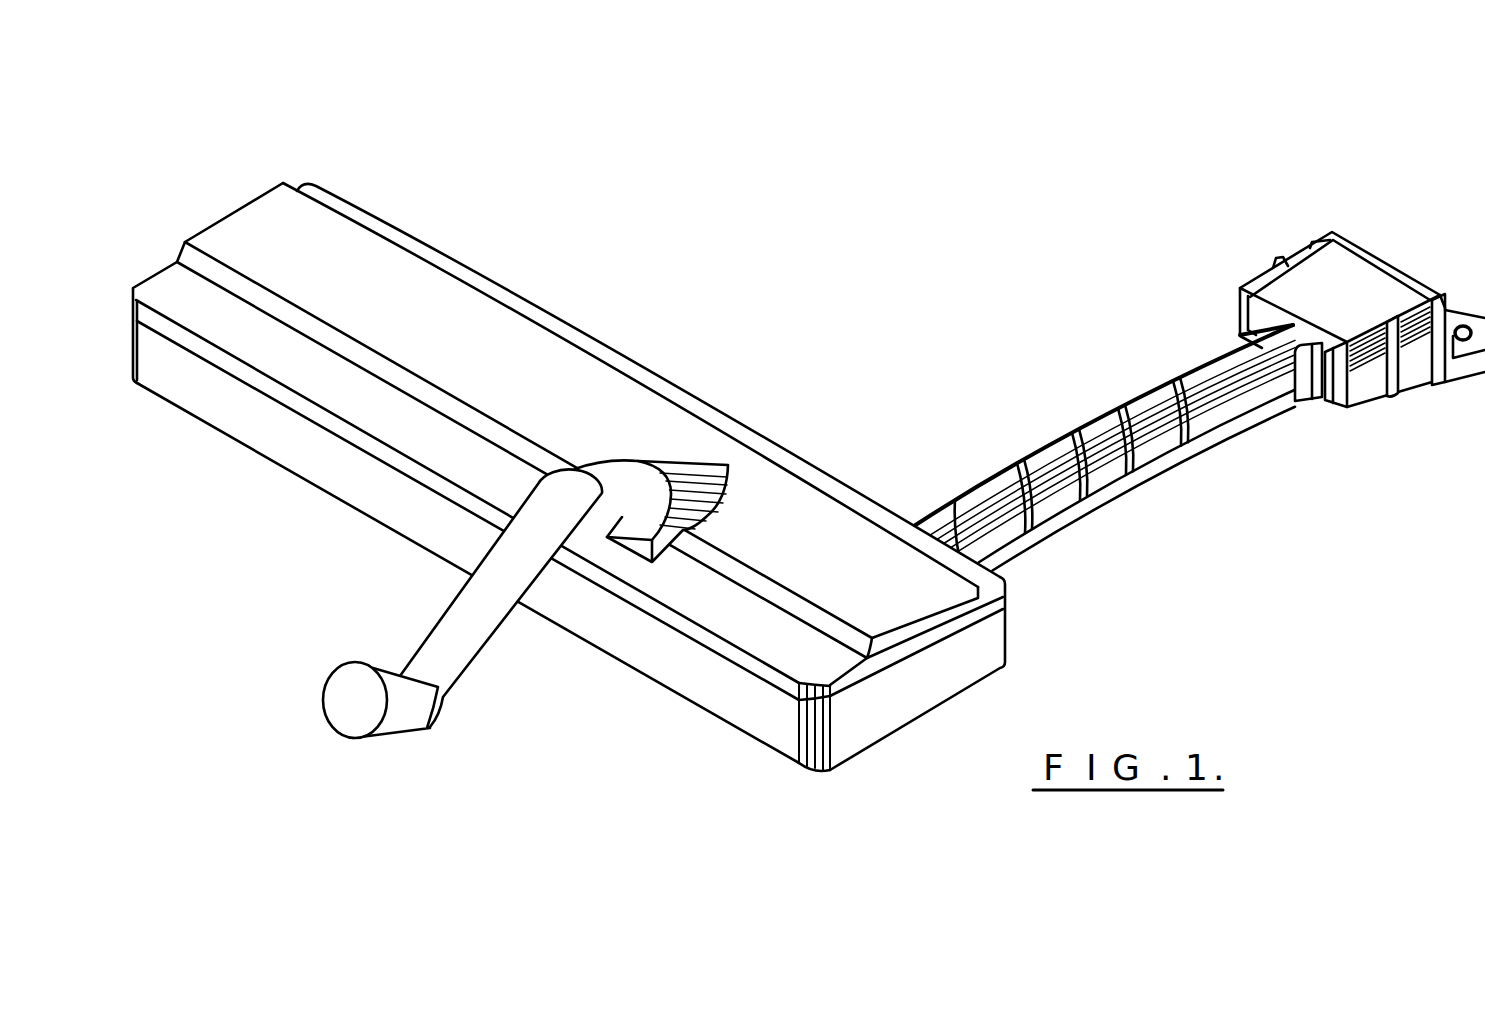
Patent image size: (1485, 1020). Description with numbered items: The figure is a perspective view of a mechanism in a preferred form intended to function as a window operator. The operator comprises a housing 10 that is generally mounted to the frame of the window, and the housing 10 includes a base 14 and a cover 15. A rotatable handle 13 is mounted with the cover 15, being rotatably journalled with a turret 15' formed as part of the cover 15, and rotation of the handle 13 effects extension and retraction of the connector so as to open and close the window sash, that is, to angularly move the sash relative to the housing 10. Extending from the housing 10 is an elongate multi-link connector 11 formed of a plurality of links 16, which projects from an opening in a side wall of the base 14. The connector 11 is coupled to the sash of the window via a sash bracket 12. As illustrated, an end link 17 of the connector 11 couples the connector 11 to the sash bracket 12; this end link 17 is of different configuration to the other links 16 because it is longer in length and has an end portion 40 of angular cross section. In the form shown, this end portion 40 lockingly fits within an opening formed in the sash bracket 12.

The housing 10 is at (486, 238).
The multi-link connector 11 is at (1129, 492).
The sash bracket 12 is at (1298, 233).
The rotatable handle 13 is at (490, 670).
The base 14 is at (690, 690).
The cover 15 is at (588, 420).
The turret 15' is at (684, 466).
The links 16 is at (1067, 435).
The end link 17 is at (1228, 412).
The end portion 40 is at (1312, 393).